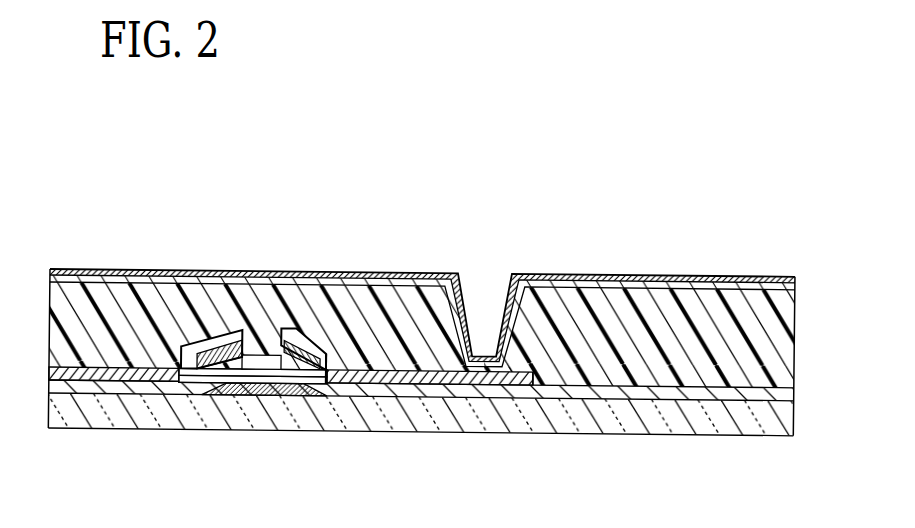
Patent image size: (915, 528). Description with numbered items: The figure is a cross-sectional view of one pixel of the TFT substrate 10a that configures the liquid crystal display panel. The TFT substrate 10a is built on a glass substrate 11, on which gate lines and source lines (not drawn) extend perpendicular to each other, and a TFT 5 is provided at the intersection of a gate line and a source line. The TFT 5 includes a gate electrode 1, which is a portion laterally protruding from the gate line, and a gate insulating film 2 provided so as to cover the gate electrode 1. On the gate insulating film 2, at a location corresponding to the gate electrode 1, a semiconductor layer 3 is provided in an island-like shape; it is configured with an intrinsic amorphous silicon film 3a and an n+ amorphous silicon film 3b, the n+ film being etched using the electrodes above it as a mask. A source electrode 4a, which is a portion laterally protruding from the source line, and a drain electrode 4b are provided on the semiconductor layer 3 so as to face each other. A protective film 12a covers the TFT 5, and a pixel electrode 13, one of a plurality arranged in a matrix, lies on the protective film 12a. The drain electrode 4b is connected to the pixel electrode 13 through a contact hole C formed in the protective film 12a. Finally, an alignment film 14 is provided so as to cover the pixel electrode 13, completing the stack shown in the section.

The TFT substrate 10a is at (91, 226).
The gate electrode 1 is at (238, 394).
The gate insulating film 2 is at (787, 393).
The semiconductor layer 3 is at (373, 472).
The intrinsic amorphous silicon film 3a is at (301, 374).
The n+ amorphous silicon film 3b is at (317, 378).
The source electrode 4a is at (182, 352).
The drain electrode 4b is at (301, 343).
The TFT 5 is at (243, 326).
The glass substrate 11 is at (790, 420).
The protective film 12a is at (780, 350).
The pixel electrode 13 is at (797, 290).
The alignment film 14 is at (797, 281).
The contact hole C is at (531, 345).